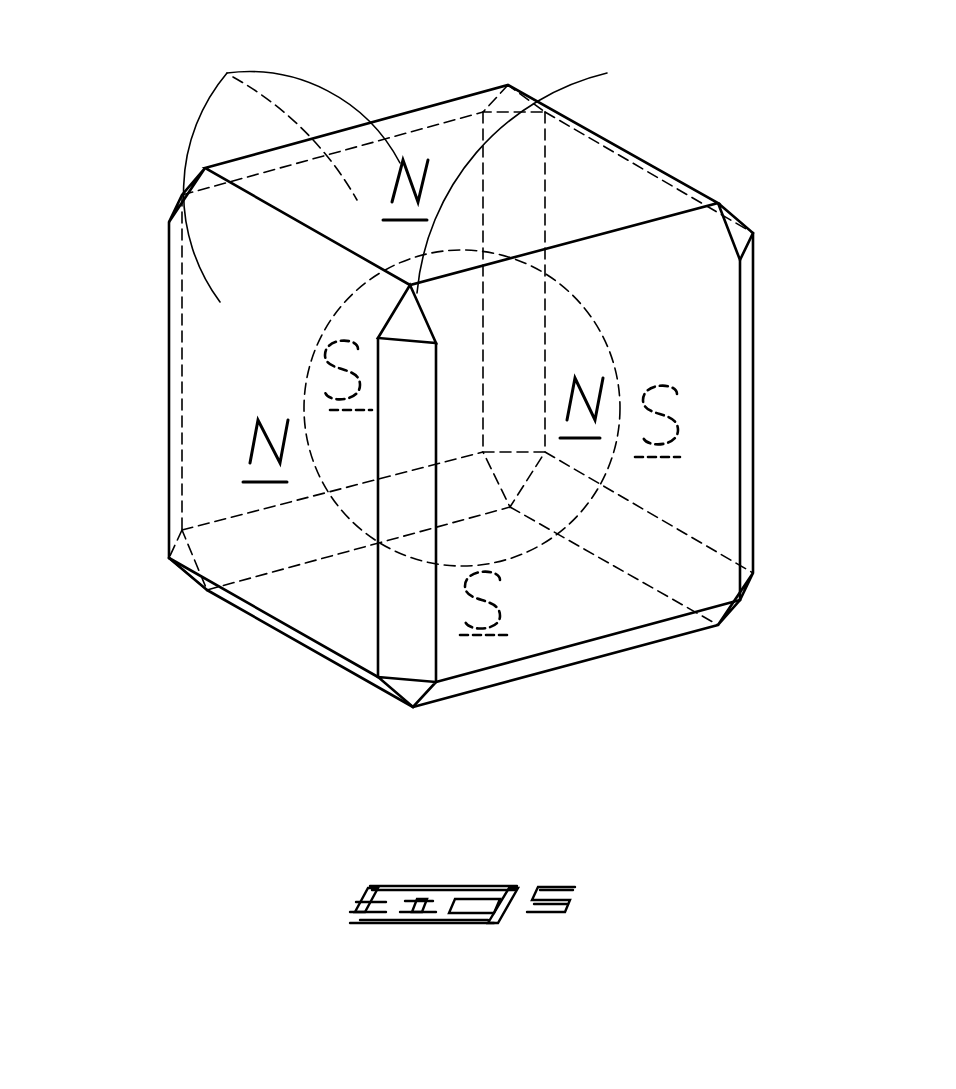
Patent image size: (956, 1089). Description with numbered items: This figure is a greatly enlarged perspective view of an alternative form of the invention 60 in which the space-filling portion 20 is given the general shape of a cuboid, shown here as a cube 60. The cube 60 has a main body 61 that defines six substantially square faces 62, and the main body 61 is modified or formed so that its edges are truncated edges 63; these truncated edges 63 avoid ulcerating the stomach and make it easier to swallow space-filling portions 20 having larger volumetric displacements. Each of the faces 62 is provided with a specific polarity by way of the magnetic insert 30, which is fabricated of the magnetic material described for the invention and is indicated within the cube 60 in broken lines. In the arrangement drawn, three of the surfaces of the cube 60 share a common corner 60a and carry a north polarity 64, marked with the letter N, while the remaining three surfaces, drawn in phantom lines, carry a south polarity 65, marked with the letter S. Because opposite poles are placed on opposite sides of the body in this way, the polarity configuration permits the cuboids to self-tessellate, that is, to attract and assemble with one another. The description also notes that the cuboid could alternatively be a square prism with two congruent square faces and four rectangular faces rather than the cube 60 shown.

The space-filling portion 20 is at (448, 407).
The magnetic insert 30 is at (615, 348).
The cube 60 is at (476, 429).
The common corner 60a is at (671, 90).
The main body 61 is at (203, 389).
The square face 62 is at (227, 72).
The truncated edge 63 is at (700, 245).
The north polarity 64 is at (718, 517).
The south polarity 65 is at (717, 420).